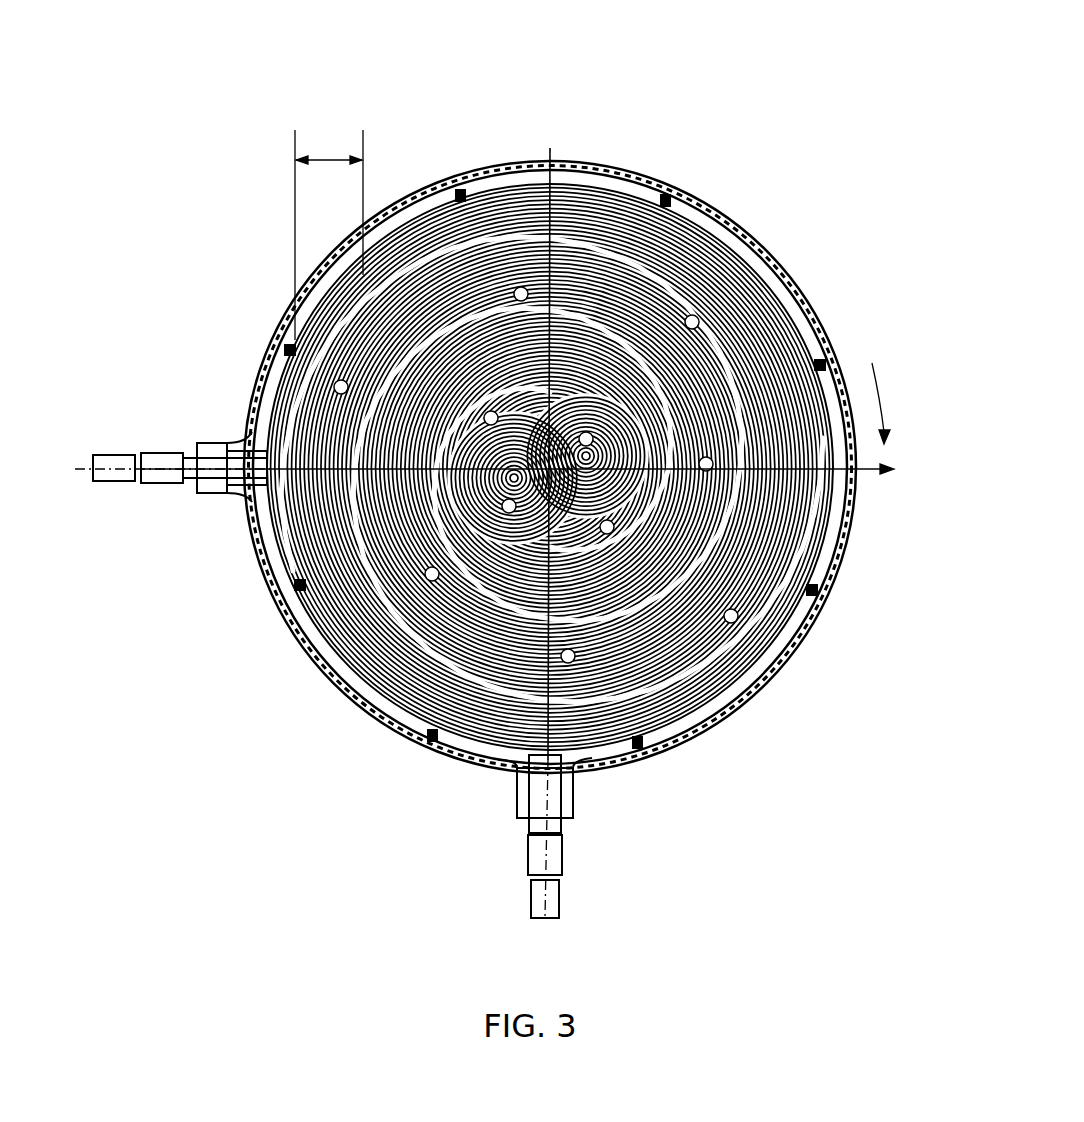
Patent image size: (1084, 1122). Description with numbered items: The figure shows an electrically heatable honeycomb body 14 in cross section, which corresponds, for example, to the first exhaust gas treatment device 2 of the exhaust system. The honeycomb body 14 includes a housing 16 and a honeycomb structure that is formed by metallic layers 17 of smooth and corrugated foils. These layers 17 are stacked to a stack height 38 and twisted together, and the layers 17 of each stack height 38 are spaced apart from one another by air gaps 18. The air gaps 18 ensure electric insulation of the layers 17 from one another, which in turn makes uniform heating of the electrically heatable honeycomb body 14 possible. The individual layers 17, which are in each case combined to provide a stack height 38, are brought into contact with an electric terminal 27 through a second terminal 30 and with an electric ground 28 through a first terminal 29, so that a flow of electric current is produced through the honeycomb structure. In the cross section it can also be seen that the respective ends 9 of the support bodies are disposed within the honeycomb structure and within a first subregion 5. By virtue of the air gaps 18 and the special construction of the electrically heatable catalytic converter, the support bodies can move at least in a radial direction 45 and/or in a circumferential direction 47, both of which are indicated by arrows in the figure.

The first exhaust gas treatment device 2 is at (171, 196).
The first subregion 5 is at (563, 400).
The ends of the support bodies 9 is at (700, 320).
The electrically heatable honeycomb body 14 is at (788, 210).
The housing 16 is at (262, 372).
The metallic layers 17 is at (305, 615).
The air gaps 18 is at (275, 528).
The electric terminal 27 is at (120, 455).
The electric ground 28 is at (555, 860).
The first terminal 29 is at (812, 360).
The second terminal 30 is at (330, 655).
The stack height 38 is at (333, 157).
The radial direction 45 is at (877, 477).
The circumferential direction 47 is at (887, 420).